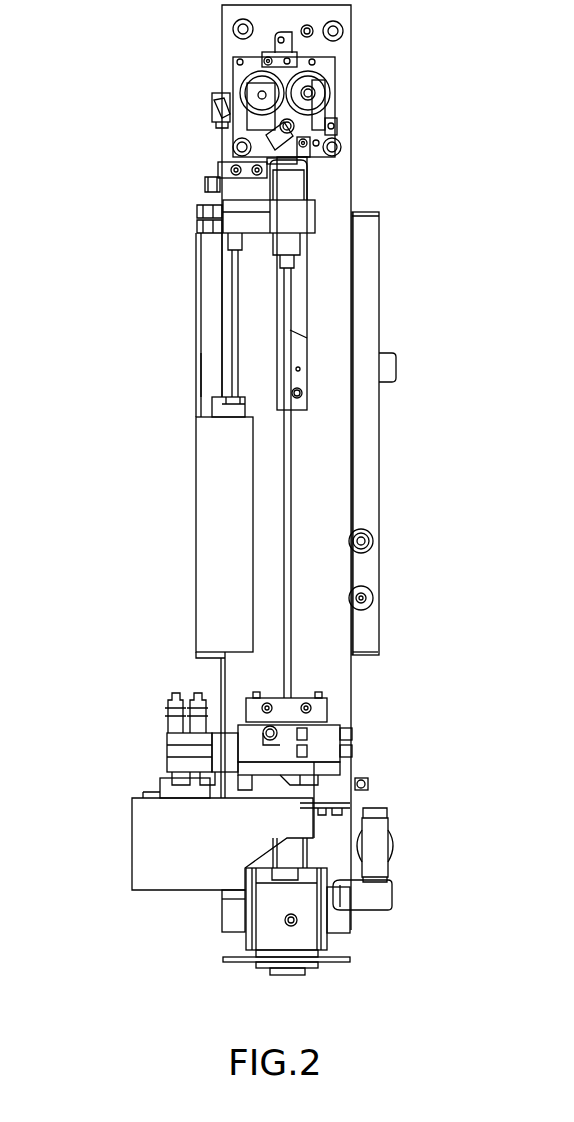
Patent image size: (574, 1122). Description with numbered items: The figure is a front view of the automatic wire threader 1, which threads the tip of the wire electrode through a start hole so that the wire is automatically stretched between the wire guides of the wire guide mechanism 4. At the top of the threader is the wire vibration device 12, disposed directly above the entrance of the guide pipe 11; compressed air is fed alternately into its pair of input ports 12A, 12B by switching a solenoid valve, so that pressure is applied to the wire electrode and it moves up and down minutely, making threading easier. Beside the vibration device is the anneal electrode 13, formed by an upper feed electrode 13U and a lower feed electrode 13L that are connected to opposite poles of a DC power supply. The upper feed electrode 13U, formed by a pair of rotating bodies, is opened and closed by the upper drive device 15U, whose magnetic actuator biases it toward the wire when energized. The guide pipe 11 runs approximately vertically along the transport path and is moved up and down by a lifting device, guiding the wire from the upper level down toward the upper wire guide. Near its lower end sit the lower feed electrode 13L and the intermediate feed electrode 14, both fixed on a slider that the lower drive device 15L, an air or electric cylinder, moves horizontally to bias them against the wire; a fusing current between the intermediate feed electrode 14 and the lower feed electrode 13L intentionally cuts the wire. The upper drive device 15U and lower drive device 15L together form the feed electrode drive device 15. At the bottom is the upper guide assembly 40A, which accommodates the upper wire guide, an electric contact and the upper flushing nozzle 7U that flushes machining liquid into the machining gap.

The automatic wire threader 1 is at (436, 145).
The wire guide mechanism 4 is at (378, 927).
The upper flushing nozzle 7U is at (307, 972).
The guide pipe 11 is at (290, 337).
The wire vibration device 12 is at (237, 207).
The input port 12A is at (200, 205).
The input port 12B is at (200, 226).
The anneal electrode 13 is at (329, 418).
The upper feed electrode 13U is at (330, 85).
The lower feed electrode 13L is at (308, 750).
The intermediate feed electrode 14 is at (315, 705).
The feed electrode drive device 15 is at (249, 474).
The upper drive device 15U is at (345, 150).
The lower drive device 15L is at (167, 750).
The upper guide assembly 40A is at (330, 933).